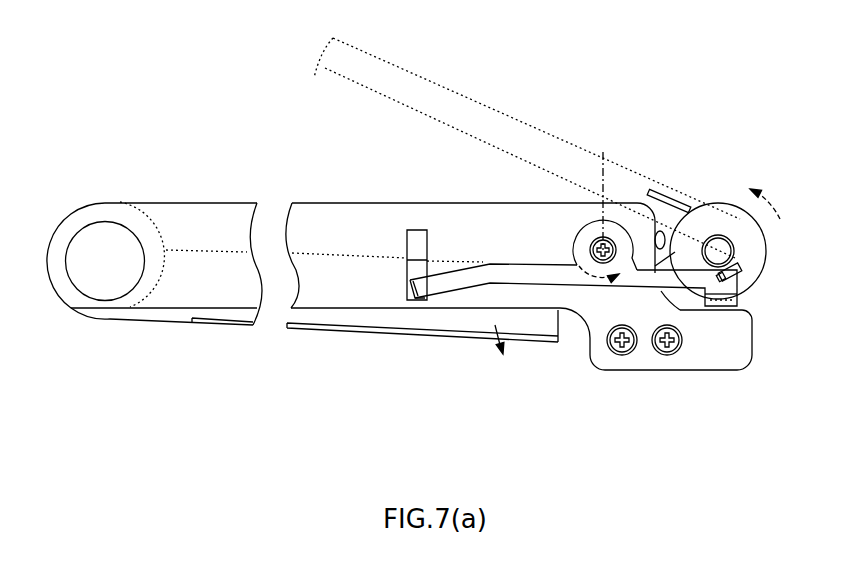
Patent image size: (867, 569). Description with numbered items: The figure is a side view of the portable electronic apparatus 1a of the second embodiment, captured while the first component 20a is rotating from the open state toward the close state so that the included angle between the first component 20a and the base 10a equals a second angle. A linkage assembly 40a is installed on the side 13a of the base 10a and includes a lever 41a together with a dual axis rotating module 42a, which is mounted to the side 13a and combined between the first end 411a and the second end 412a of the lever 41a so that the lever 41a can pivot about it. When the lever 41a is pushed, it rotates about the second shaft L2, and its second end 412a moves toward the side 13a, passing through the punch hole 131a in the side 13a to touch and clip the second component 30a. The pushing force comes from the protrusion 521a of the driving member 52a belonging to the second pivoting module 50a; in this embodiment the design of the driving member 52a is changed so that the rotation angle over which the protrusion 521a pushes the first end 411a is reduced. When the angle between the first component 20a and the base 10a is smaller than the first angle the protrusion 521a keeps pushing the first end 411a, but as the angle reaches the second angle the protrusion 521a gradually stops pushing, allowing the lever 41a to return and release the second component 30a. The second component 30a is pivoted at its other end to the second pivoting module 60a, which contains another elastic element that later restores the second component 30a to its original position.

The portable electronic apparatus 1a is at (67, 91).
The base 10a is at (163, 207).
The second pivoting module 60a is at (76, 246).
The side of the base 13a is at (367, 203).
The punch hole 131a is at (420, 230).
The second component 30a is at (321, 327).
The second end of the lever 412a is at (409, 291).
The lever 41a is at (515, 264).
The first end of the lever 411a is at (713, 306).
The dual axis rotating module 42a is at (590, 241).
The linkage assembly 40a is at (608, 285).
The second pivoting module 50a is at (753, 307).
The driving member 52a is at (768, 238).
The protrusion 521a is at (742, 273).
The first component 20a is at (469, 108).
The second shaft L2 is at (603, 193).